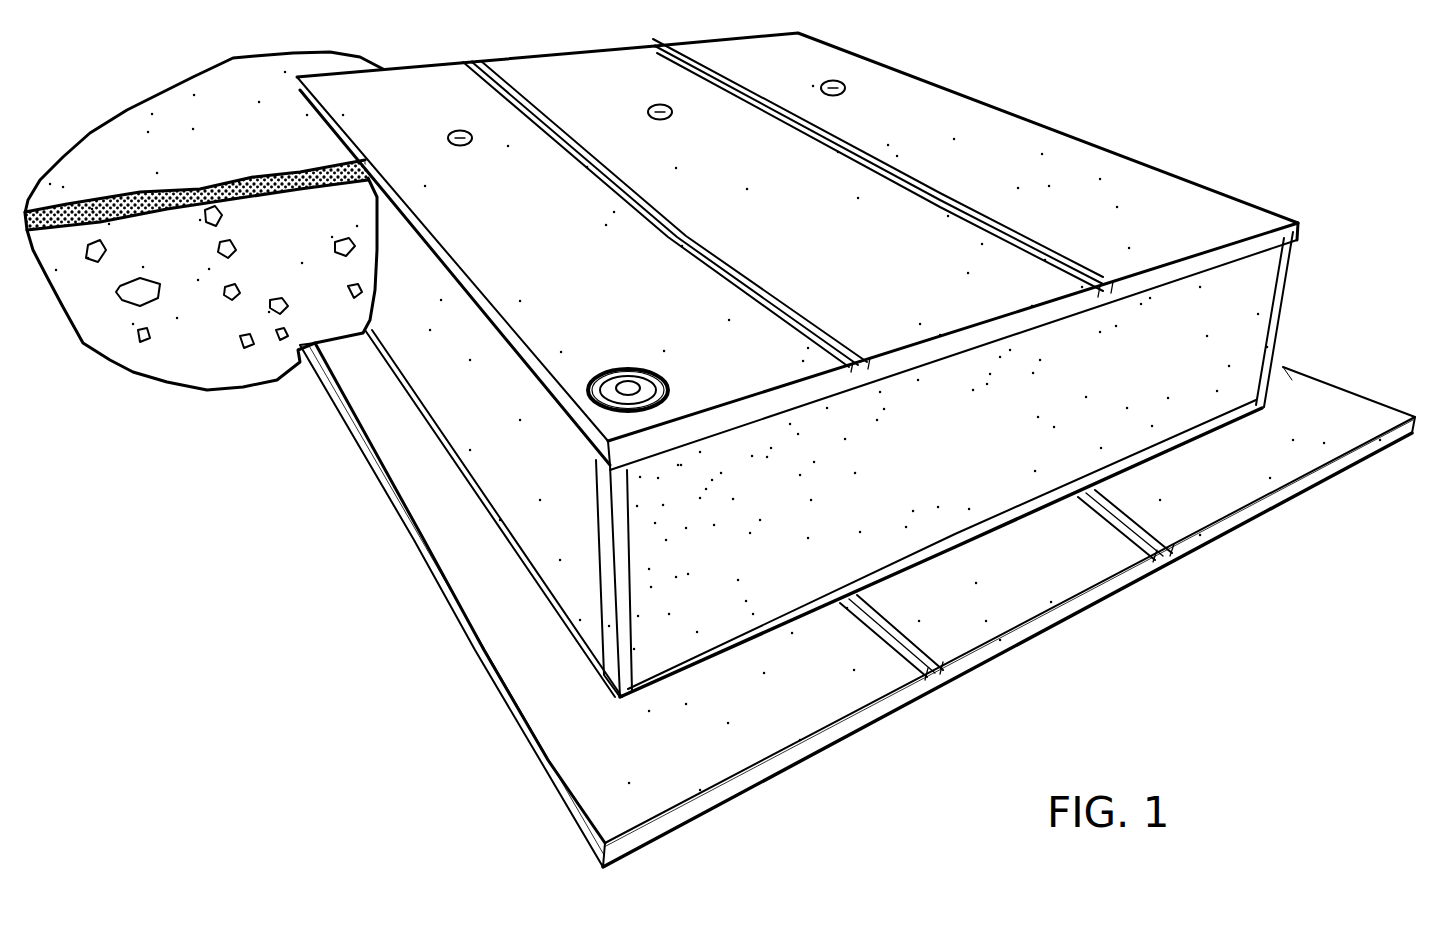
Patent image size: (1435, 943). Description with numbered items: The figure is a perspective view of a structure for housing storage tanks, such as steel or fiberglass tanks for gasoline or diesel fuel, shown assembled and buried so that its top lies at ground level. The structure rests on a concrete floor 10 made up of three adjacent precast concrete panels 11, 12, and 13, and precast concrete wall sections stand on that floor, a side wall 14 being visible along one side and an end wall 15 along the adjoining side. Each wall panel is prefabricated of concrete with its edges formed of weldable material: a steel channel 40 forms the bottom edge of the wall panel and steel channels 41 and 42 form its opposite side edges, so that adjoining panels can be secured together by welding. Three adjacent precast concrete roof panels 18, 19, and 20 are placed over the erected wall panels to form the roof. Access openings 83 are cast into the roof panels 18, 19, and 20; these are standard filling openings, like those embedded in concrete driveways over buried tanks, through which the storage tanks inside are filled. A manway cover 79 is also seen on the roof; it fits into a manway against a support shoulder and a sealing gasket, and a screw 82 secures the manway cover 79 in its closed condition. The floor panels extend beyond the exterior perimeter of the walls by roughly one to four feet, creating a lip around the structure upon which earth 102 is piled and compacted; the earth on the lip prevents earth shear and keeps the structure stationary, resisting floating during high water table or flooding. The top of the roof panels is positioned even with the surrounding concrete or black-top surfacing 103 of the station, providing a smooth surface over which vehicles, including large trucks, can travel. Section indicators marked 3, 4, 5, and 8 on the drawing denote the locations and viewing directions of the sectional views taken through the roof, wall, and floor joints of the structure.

The concrete floor 10 is at (388, 532).
The precast concrete floor panel 11 is at (737, 797).
The precast concrete floor panel 12 is at (972, 667).
The precast concrete floor panel 13 is at (1367, 460).
The side wall panel 14 is at (423, 370).
The end wall panel 15 is at (1208, 420).
The precast concrete roof panel 18 is at (440, 73).
The precast concrete roof panel 19 is at (567, 61).
The precast concrete roof panel 20 is at (722, 43).
The steel channel 40 is at (1208, 527).
The steel channel 41 is at (603, 683).
The steel channel 42 is at (1283, 332).
The manway cover 79 is at (640, 372).
The screw 82 is at (612, 372).
The access opening 83 is at (462, 114).
The earth 102 is at (125, 346).
The concrete or black-top surfacing 103 is at (90, 146).
The section line 3 is at (1135, 205).
The section line 4 is at (1283, 348).
The section line 5 is at (1292, 292).
The section line 8 is at (680, 377).